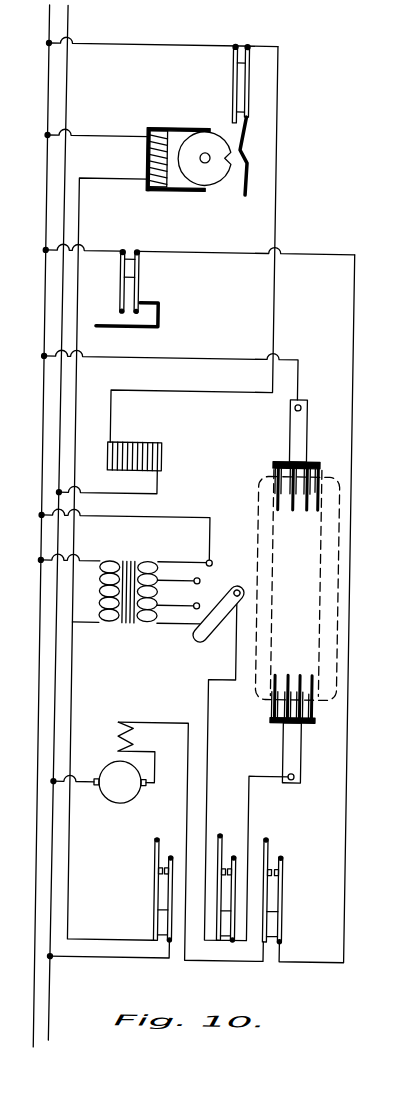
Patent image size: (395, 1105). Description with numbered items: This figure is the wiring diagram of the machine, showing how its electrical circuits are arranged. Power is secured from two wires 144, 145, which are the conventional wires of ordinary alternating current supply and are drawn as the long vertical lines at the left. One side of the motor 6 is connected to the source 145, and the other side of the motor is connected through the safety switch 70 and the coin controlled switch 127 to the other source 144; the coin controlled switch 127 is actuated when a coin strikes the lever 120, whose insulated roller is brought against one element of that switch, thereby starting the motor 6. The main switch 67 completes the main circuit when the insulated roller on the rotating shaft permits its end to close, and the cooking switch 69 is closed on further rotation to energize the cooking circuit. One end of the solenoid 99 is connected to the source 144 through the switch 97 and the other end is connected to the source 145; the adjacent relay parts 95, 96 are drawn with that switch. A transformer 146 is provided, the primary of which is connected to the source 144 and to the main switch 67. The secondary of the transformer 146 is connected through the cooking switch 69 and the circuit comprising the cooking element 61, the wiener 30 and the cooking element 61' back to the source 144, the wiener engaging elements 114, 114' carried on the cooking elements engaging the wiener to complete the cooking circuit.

The motor 6 is at (121, 800).
The wiener 30 is at (266, 514).
The cooking element 61 is at (306, 753).
The cooking element 61' is at (315, 431).
The main switch 67 is at (167, 919).
The cooking switch 69 is at (227, 901).
The safety switch 70 is at (297, 909).
The relay cam 95 is at (215, 180).
The armature 96 is at (249, 156).
The switch 97 is at (234, 61).
The solenoid 99 is at (149, 440).
The wiener engaging elements 114 is at (277, 699).
The brushes 114' is at (330, 487).
The lever 120 is at (108, 328).
The coin controlled switch 127 is at (142, 272).
The wire 144 is at (49, 1046).
The wire 145 is at (65, 1007).
The transformer 146 is at (143, 558).